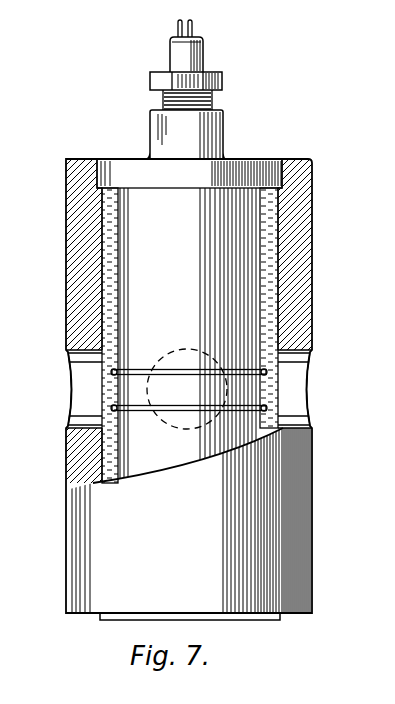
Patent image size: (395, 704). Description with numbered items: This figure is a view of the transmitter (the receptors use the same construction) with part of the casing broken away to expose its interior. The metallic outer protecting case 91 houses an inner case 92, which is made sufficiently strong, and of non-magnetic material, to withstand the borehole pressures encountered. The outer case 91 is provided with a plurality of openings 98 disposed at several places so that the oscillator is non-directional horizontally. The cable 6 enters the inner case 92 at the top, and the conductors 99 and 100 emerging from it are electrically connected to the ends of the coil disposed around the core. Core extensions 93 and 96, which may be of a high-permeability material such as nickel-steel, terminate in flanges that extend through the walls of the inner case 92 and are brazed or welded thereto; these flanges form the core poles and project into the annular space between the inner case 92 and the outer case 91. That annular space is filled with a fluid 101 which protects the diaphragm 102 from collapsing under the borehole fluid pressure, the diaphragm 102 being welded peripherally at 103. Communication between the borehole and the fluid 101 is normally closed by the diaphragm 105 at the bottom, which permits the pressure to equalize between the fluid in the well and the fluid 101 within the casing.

The cable 6 is at (192, 58).
The outer protecting case 91 is at (312, 251).
The inner case 92 is at (132, 256).
The core extension 93 is at (100, 370).
The core extension 96 is at (88, 407).
The openings 98 is at (182, 424).
The conductor 99 is at (178, 25).
The conductor 100 is at (193, 23).
The fluid 101 is at (272, 223).
The diaphragm 102 is at (88, 390).
The peripheral weld 103 is at (285, 317).
The diaphragm 105 is at (108, 617).